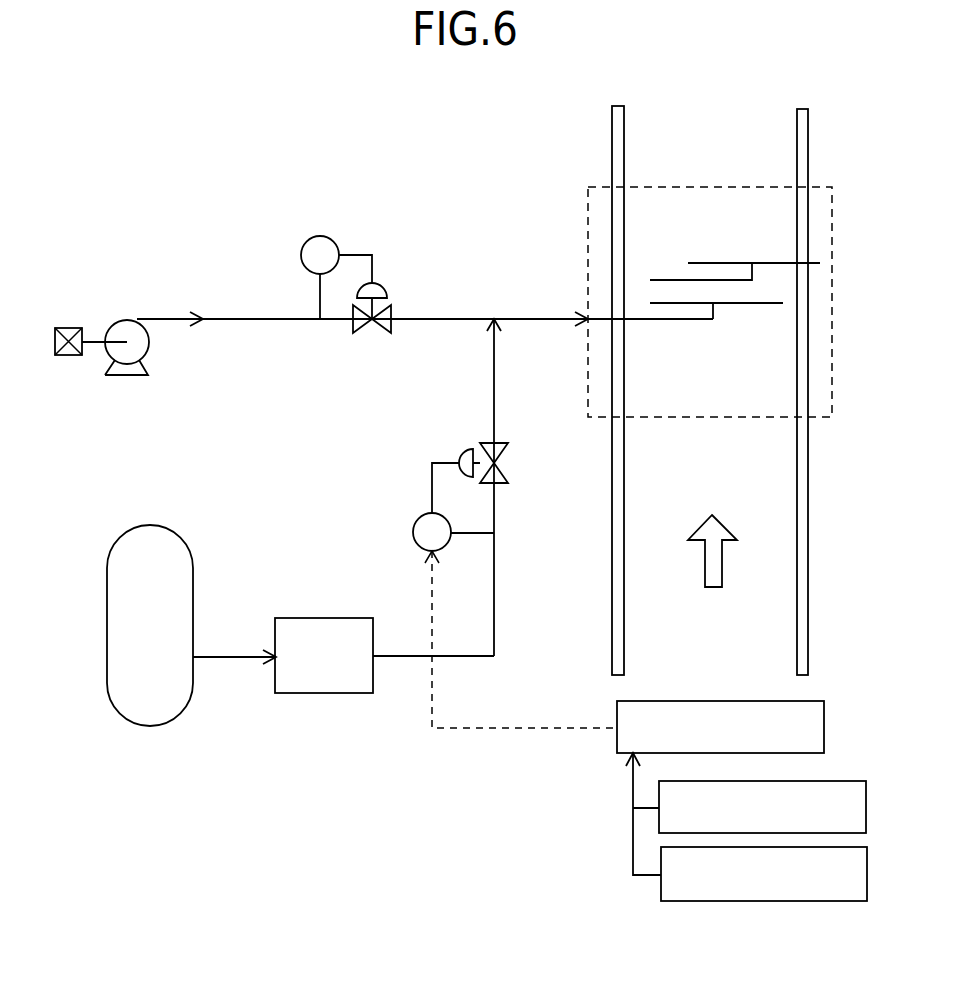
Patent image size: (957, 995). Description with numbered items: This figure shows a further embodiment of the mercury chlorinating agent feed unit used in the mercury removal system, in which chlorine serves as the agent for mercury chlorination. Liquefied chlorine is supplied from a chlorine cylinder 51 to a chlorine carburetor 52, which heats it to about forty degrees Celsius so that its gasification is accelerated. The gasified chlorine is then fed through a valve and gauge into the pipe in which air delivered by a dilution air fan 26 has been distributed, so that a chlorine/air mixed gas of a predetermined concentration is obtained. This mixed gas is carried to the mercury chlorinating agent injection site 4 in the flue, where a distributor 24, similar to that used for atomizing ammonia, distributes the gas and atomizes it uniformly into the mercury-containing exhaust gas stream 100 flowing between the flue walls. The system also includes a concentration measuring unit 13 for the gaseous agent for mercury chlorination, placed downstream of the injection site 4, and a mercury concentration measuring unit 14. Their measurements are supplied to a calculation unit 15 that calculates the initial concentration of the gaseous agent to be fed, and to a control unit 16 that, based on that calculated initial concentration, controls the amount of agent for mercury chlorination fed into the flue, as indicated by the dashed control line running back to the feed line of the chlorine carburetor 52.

The dilution air fan 26 is at (120, 332).
The mercury chlorinating agent injection site 4 is at (832, 228).
The distributor 24 is at (783, 263).
The mercury-containing exhaust gas stream 100 is at (712, 587).
The chlorine cylinder 51 is at (145, 726).
The chlorine carburetor 52 is at (310, 693).
The calculation unit 15 is at (785, 713).
The control unit 16 is at (824, 722).
The concentration measuring unit 13 is at (827, 781).
The mercury concentration measuring unit 14 is at (867, 873).